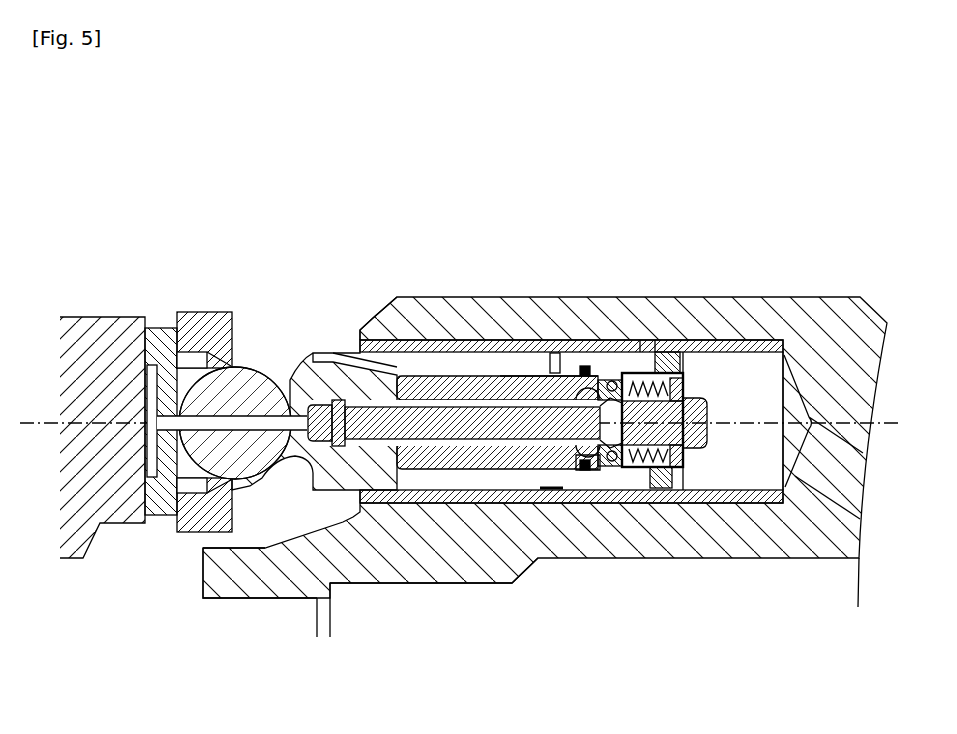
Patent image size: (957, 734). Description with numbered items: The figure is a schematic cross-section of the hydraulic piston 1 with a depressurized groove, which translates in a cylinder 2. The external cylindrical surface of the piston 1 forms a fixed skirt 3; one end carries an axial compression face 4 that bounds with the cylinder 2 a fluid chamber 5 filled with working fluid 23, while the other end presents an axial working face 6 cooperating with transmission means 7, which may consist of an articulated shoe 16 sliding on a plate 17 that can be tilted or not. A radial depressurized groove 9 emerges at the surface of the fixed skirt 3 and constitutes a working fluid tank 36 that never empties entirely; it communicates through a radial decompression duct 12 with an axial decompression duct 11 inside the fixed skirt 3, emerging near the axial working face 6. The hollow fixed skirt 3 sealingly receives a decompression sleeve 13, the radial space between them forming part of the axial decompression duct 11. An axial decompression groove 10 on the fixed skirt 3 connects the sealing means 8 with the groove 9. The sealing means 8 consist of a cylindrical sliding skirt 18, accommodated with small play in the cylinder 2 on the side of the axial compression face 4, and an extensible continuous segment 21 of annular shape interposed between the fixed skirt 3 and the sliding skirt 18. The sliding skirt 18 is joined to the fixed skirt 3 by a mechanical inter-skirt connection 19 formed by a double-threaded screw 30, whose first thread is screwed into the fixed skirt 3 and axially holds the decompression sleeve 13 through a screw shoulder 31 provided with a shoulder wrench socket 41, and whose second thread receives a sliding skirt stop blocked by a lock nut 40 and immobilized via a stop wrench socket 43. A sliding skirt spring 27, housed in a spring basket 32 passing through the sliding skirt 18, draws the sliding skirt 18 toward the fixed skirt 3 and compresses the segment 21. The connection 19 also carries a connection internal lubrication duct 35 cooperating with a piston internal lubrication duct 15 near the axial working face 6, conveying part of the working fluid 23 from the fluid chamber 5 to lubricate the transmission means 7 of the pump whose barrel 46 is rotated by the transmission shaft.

The hydraulic piston 1 is at (373, 318).
The cylinder 2 is at (742, 352).
The fixed skirt 3 is at (483, 340).
The axial compression face 4 is at (686, 474).
The fluid chamber 5 is at (800, 358).
The axial working face 6 is at (152, 452).
The transmission means 7 is at (158, 328).
The sealing means 8 is at (668, 343).
The radial depressurized groove 9 is at (560, 372).
The axial decompression groove 10 is at (630, 470).
The axial decompression duct 11 is at (342, 362).
The radial decompression duct 12 is at (517, 376).
The decompression sleeve 13 is at (457, 393).
The piston internal lubrication duct 15 is at (287, 414).
The articulated shoe 16 is at (252, 330).
The plate 17 is at (105, 343).
The sliding skirt 18 is at (686, 378).
The mechanical inter-skirt connection 19 is at (742, 350).
The extensible continuous segment 21 is at (647, 347).
The working fluid 23 is at (757, 450).
The sliding skirt spring 27 is at (665, 488).
The double-threaded screw 30 is at (458, 440).
The screw shoulder 31 is at (585, 366).
The spring basket 32 is at (587, 470).
The connection internal lubrication duct 35 is at (404, 577).
The working fluid tank 36 is at (543, 491).
The lock nut 40 is at (686, 470).
The shoulder wrench socket 41 is at (612, 380).
The stop wrench socket 43 is at (708, 452).
The barrel 46 is at (380, 567).